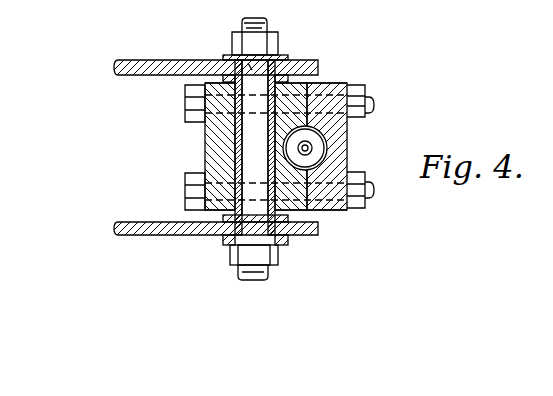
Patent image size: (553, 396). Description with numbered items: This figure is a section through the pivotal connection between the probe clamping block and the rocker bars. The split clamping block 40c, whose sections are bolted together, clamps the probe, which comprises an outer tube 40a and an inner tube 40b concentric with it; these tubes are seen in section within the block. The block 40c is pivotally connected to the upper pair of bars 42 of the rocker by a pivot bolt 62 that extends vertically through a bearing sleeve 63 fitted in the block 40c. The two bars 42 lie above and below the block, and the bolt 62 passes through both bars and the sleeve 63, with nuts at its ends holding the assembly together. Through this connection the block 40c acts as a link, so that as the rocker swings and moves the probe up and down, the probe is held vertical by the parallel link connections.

The upper pair of bars 42 is at (196, 37).
The pivot bolt 62 is at (285, 57).
The bearing sleeve 63 is at (236, 146).
The outer tube 40a is at (345, 132).
The inner tube 40b is at (345, 142).
The split clamping block 40c is at (292, 90).